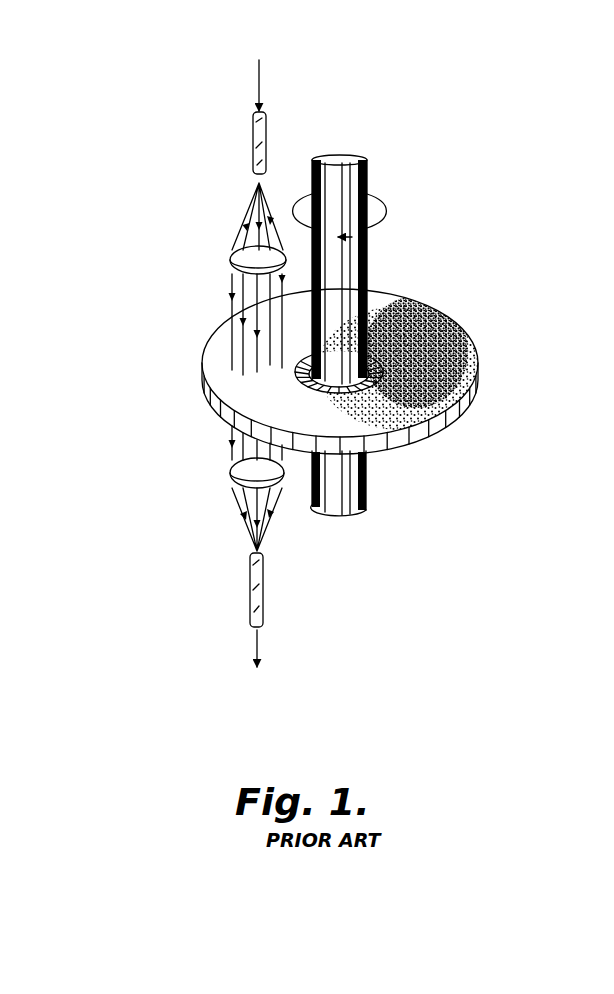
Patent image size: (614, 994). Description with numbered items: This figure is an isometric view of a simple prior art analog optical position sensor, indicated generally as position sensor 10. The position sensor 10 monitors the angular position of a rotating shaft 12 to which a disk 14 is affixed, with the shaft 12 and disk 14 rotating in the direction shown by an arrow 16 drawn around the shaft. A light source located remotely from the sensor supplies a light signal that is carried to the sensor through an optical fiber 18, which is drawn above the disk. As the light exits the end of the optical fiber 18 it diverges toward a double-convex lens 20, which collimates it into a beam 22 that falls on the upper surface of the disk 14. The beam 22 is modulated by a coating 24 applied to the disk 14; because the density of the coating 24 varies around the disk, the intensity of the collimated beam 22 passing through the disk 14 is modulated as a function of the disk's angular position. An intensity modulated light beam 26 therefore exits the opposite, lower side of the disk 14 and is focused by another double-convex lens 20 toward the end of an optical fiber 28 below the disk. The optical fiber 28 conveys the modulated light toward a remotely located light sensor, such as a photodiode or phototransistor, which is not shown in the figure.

The position sensor 10 is at (484, 442).
The rotating shaft 12 is at (368, 174).
The disk 14 is at (478, 378).
The arrow 16 is at (387, 216).
The optical fiber 18 is at (267, 140).
The double-convex lens 20 is at (231, 258).
The beam 22 is at (229, 290).
The coating 24 is at (450, 347).
The intensity modulated light beam 26 is at (227, 440).
The optical fiber 28 is at (250, 602).